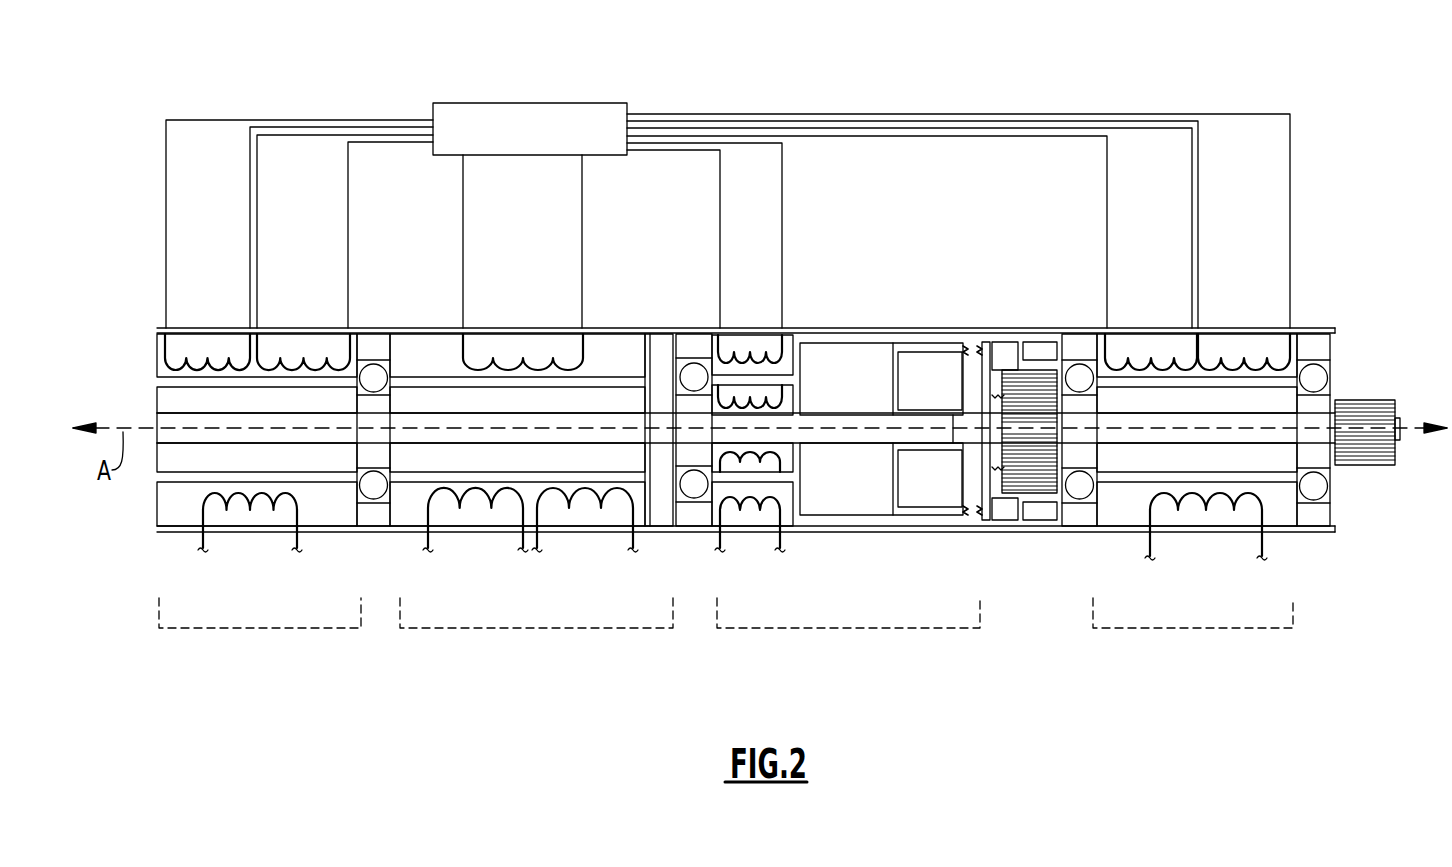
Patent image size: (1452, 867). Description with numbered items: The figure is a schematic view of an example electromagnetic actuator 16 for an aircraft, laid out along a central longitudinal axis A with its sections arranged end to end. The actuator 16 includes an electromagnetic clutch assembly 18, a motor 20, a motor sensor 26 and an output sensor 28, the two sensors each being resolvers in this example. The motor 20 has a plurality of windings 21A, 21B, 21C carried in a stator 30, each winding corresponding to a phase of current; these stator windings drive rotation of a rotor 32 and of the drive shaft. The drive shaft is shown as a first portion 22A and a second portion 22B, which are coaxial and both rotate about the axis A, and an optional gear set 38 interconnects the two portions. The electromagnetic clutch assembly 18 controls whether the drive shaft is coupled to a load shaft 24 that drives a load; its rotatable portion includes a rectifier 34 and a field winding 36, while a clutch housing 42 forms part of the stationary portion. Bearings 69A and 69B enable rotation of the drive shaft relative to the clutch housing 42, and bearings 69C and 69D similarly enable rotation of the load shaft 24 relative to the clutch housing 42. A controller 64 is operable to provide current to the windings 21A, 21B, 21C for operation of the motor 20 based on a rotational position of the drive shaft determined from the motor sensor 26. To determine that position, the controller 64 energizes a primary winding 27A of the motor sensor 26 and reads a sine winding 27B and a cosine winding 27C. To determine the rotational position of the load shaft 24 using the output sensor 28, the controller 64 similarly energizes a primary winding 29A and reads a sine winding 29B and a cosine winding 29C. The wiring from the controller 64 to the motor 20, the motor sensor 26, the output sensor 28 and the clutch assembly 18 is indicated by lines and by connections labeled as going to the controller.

The electromagnetic actuator 16 is at (1200, 78).
The electromagnetic clutch assembly 18 is at (812, 628).
The motor 20 is at (497, 628).
The first portion of the drive shaft 22A is at (161, 425).
The second portion of the drive shaft 22B is at (945, 438).
The load shaft 24 is at (1180, 422).
The motor sensor 26 is at (240, 628).
The output sensor 28 is at (1188, 628).
The stator 30 is at (418, 352).
The rotor 32 is at (625, 400).
The rectifier 34 is at (858, 508).
The field winding 36 is at (941, 506).
The gear set 38 is at (659, 513).
The clutch housing 42 is at (332, 528).
The controller 64 is at (472, 103).
The bearing 69A is at (368, 344).
The bearing 69B is at (699, 345).
The bearing 69C is at (1078, 347).
The bearing 69D is at (1317, 347).
The winding 21A is at (510, 368).
The winding 21B is at (445, 490).
The winding 21C is at (587, 490).
The primary winding 27A is at (203, 511).
The sine winding 27B is at (193, 366).
The cosine winding 27C is at (287, 366).
The primary winding 29A is at (1150, 510).
The sine winding 29B is at (1141, 366).
The cosine winding 29C is at (1232, 366).